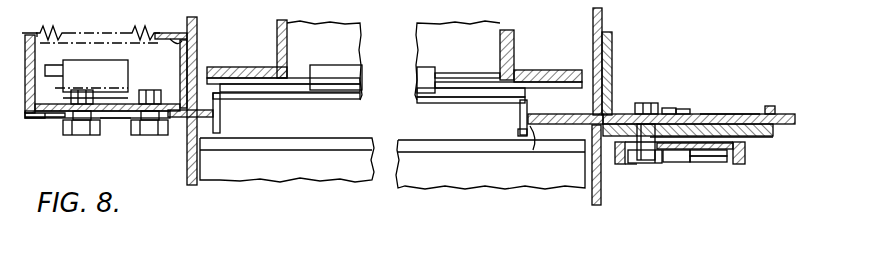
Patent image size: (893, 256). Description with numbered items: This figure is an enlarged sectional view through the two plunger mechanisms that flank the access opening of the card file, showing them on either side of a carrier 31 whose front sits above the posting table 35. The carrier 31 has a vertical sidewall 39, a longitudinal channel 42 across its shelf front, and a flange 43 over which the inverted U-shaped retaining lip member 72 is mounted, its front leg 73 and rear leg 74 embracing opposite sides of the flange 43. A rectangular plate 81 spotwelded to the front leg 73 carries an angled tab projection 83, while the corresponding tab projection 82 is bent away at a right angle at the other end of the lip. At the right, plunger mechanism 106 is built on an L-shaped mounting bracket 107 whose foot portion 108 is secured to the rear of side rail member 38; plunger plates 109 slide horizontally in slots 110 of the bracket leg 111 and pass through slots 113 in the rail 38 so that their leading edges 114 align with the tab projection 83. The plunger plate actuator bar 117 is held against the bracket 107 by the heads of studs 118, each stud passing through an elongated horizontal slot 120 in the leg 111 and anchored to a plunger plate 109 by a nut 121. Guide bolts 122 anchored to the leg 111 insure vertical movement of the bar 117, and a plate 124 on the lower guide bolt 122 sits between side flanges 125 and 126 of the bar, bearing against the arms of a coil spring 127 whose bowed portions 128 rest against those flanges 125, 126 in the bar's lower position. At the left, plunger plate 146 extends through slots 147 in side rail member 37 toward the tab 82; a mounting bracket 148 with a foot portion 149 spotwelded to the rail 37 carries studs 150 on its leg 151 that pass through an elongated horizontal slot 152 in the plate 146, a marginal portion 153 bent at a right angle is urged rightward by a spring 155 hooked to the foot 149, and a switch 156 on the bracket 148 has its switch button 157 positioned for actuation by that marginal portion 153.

The marginal portion 153 is at (27, 34).
The spring 155 is at (62, 31).
The foot portion 149 is at (183, 33).
The side rail member 37 is at (198, 33).
The mounting bracket 148 is at (174, 80).
The switch 156 is at (112, 80).
The studs 150 is at (85, 137).
The elongated horizontal slot 152 is at (110, 119).
The leg 151 is at (125, 120).
The switch button 157 is at (48, 111).
The sidewall 39 is at (285, 23).
The longitudinal channel 42 is at (418, 36).
The retaining lip member 72 is at (345, 86).
The angled tab projection 82 is at (225, 107).
The slots 147 is at (223, 122).
The plunger plates 146 is at (200, 158).
The posting table 35 is at (335, 175).
The rear leg 74 is at (452, 73).
The flange 43 is at (470, 84).
The carrier 31 is at (525, 56).
The front leg 73 is at (455, 95).
The rectangular plate 81 is at (492, 101).
The angled tab projection 83 is at (520, 132).
The leading edges 114 is at (532, 130).
The plunger plates 109 is at (580, 130).
The slots 113 is at (586, 118).
The side rail member 38 is at (603, 19).
The foot portion 108 is at (612, 75).
The slots 110 is at (612, 114).
The nut 121 is at (651, 103).
The studs 118 is at (668, 108).
The elongated horizontal slot 120 is at (689, 112).
The plunger plate actuator bar 117 is at (715, 116).
The mounting bracket 107 is at (760, 136).
The bracket leg 111 is at (757, 142).
The bowed portions 128 is at (620, 165).
The side flange 126 is at (740, 165).
The plunger mechanism 106 is at (730, 190).
The plate 124 is at (720, 166).
The coil spring 127 is at (722, 162).
The guide bolts 122 is at (681, 165).
The side flange 125 is at (652, 164).